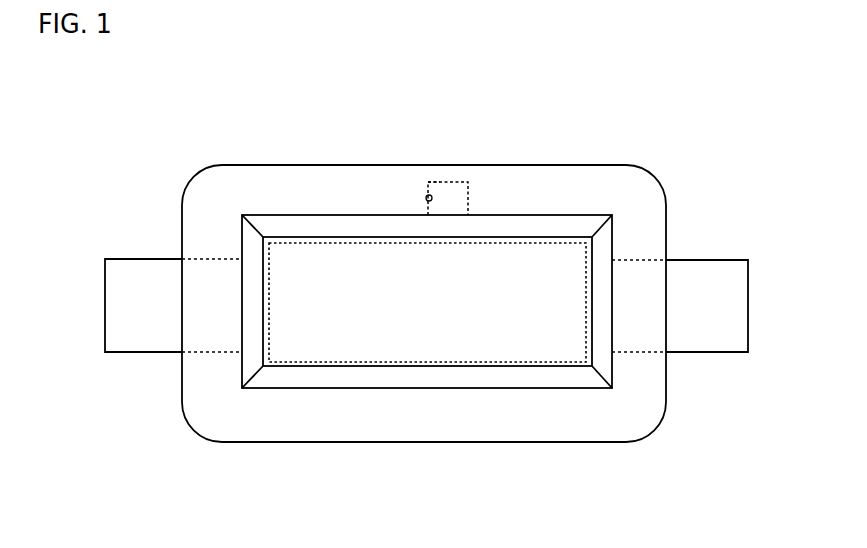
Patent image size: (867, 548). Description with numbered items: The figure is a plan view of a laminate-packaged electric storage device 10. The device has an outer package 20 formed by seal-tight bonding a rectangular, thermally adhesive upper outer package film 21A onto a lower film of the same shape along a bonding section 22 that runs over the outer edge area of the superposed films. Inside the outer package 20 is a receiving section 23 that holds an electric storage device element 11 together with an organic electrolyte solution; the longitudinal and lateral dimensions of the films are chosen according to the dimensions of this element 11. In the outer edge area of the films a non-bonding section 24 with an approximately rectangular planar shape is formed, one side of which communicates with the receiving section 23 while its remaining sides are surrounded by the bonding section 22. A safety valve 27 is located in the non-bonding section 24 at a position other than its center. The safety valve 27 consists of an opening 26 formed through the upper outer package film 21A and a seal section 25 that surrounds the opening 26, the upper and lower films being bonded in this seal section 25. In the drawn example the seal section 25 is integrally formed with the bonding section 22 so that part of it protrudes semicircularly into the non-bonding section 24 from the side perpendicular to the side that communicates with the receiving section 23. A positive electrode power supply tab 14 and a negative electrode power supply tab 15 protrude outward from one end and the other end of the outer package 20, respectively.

The laminate-packaged electric storage device 10 is at (203, 144).
The outer package 20 is at (567, 165).
The electric storage device element 11 is at (548, 362).
The positive electrode power supply tab 14 is at (133, 267).
The negative electrode power supply tab 15 is at (707, 277).
The upper outer package film 21A is at (482, 435).
The bonding section 22 is at (302, 420).
The receiving section 23 is at (400, 380).
The non-bonding section 24 is at (466, 192).
The seal section 25 is at (434, 195).
The opening 26 is at (426, 198).
The safety valve 27 is at (434, 178).